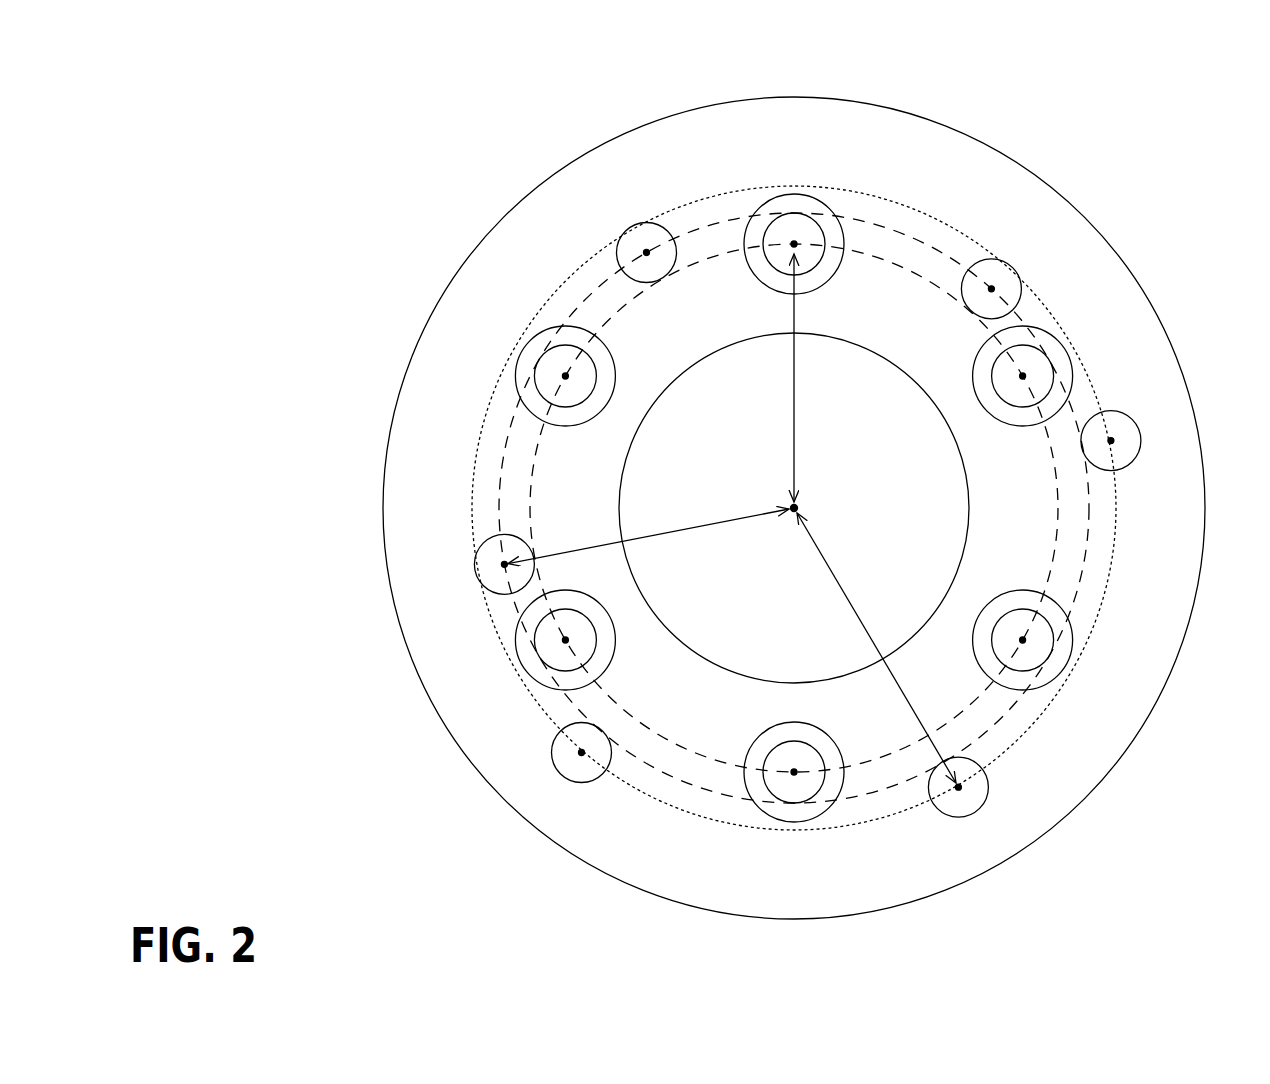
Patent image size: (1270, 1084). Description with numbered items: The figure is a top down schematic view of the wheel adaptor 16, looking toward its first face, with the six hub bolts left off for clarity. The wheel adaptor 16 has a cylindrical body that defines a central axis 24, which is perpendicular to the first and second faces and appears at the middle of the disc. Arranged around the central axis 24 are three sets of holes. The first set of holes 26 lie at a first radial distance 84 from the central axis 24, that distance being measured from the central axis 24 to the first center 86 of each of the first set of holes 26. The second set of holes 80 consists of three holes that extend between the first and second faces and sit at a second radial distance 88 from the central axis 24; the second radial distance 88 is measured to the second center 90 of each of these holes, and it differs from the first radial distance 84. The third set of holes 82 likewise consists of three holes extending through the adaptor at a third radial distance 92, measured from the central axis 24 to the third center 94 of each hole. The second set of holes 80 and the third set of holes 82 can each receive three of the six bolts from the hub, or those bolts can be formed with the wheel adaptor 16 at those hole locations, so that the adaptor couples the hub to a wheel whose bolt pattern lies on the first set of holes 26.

The wheel adaptor 16 is at (1215, 81).
The central axis 24 is at (794, 508).
The first set of holes 26 is at (812, 190).
The second set of holes 80 is at (632, 226).
The third set of holes 82 is at (1141, 441).
The first radial distance 84 is at (797, 418).
The first center 86 is at (794, 244).
The second radial distance 88 is at (690, 529).
The second center 90 is at (646, 252).
The third radial distance 92 is at (842, 587).
The third center 94 is at (1111, 441).